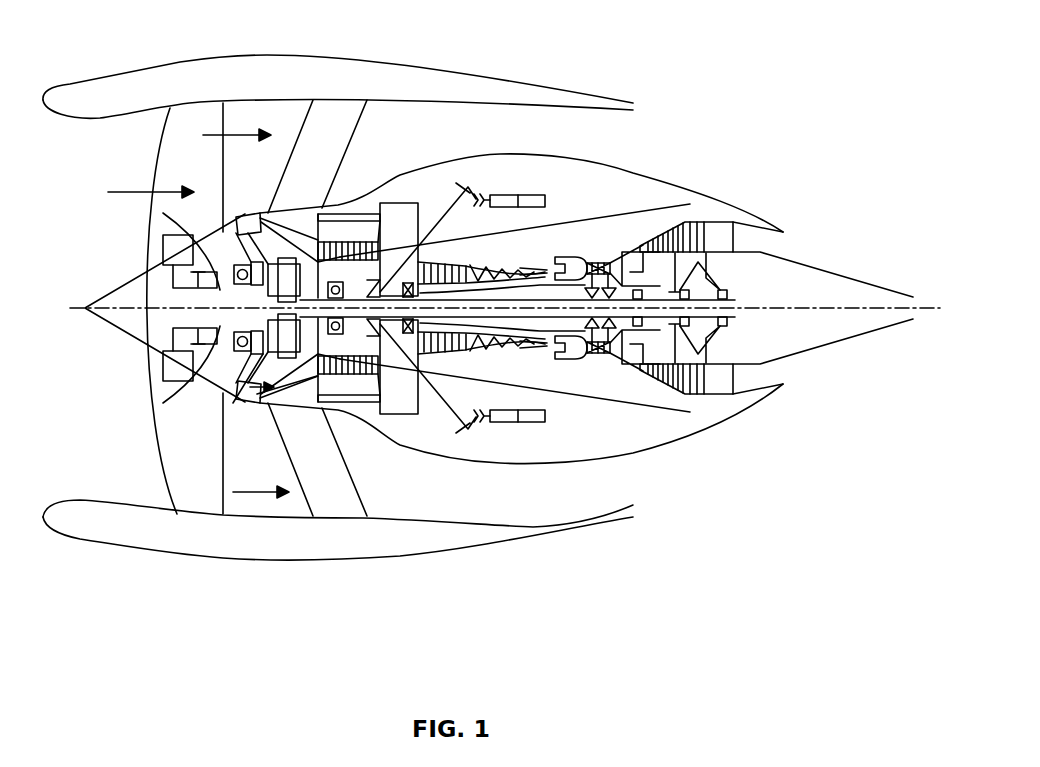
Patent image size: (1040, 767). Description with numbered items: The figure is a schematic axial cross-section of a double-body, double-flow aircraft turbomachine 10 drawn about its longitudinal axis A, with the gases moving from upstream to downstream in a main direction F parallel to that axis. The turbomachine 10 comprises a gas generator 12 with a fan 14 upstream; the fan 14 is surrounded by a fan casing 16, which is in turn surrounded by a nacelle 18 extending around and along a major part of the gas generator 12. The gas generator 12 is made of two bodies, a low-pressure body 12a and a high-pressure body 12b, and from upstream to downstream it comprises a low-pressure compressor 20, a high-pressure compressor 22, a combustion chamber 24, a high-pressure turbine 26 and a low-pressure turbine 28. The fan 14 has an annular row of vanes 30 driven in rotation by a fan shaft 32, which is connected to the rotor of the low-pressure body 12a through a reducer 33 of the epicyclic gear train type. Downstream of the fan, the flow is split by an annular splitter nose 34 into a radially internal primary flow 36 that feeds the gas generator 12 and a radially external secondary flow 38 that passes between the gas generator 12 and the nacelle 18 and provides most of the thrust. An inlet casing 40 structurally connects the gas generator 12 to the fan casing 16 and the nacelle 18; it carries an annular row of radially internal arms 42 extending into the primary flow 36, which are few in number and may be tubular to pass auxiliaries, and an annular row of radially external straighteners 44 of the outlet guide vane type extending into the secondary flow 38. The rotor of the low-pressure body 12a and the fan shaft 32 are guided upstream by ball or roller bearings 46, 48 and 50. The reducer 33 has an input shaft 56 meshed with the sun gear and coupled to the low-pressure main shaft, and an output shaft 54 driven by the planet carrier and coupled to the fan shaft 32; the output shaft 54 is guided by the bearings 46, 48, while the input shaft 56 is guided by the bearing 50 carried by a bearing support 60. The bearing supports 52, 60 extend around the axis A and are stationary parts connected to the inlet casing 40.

The turbomachine 10 is at (768, 94).
The gas generator 12 is at (413, 194).
The low-pressure body 12a is at (330, 400).
The high-pressure body 12b is at (512, 356).
The fan 14 is at (162, 479).
The fan casing 16 is at (197, 515).
The nacelle 18 is at (130, 78).
The low-pressure compressor 20 is at (367, 363).
The high-pressure compressor 22 is at (467, 353).
The combustion chamber 24 is at (570, 262).
The high-pressure turbine 26 is at (600, 263).
The low-pressure turbine 28 is at (686, 224).
The vanes 30 is at (200, 115).
The fan shaft 32 is at (172, 300).
The reducer 33 is at (283, 343).
The annular splitter nose 34 is at (243, 402).
The primary flow 36 is at (232, 400).
The secondary flow 38 is at (240, 127).
The inlet casing 40 is at (298, 193).
The arms 42 is at (310, 378).
The straighteners 44 is at (345, 117).
The bearing 46 is at (203, 337).
The bearing 48 is at (240, 343).
The bearing 50 is at (338, 380).
The bearing support 52 is at (224, 250).
The output shaft 54 is at (243, 233).
The input shaft 56 is at (284, 292).
The bearing support 60 is at (347, 115).
The longitudinal axis A is at (857, 312).
The main direction of flow F is at (137, 192).